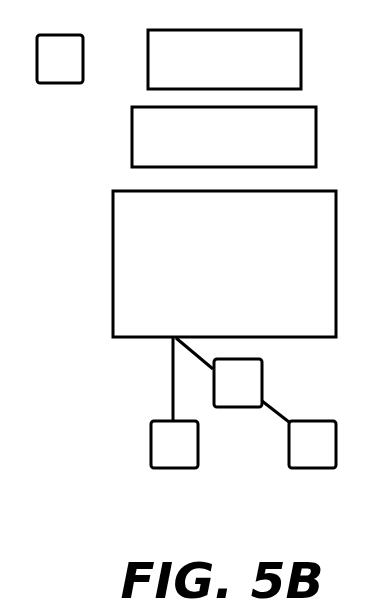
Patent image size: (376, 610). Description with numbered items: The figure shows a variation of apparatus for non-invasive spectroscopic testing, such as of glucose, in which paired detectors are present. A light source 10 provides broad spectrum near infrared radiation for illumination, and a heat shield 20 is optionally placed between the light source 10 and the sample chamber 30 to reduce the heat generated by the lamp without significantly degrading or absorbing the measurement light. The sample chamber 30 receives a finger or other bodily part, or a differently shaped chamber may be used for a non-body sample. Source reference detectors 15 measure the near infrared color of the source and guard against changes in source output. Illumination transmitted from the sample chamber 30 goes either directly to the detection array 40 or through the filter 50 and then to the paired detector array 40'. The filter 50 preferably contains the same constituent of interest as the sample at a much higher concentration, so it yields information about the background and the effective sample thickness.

The light source 10 is at (207, 72).
The source reference detectors 15 is at (46, 71).
The heat shield 20 is at (212, 150).
The sample chamber 30 is at (200, 279).
The detection array 40 is at (174, 444).
The paired detector array 40' is at (312, 444).
The filter 50 is at (228, 397).